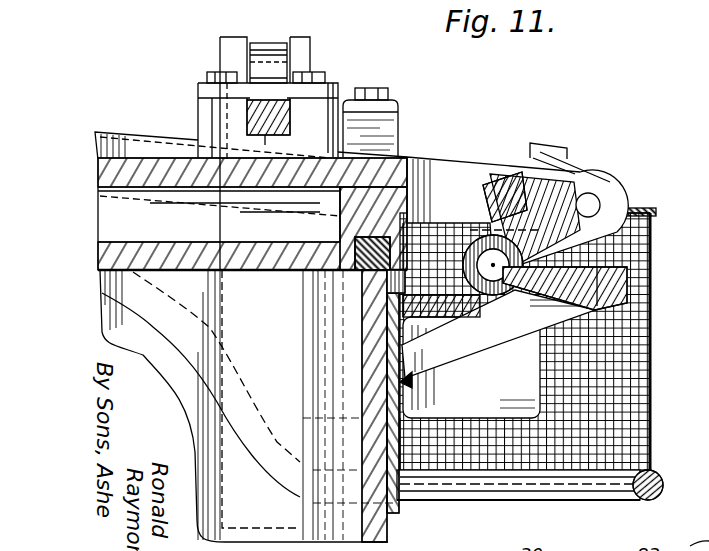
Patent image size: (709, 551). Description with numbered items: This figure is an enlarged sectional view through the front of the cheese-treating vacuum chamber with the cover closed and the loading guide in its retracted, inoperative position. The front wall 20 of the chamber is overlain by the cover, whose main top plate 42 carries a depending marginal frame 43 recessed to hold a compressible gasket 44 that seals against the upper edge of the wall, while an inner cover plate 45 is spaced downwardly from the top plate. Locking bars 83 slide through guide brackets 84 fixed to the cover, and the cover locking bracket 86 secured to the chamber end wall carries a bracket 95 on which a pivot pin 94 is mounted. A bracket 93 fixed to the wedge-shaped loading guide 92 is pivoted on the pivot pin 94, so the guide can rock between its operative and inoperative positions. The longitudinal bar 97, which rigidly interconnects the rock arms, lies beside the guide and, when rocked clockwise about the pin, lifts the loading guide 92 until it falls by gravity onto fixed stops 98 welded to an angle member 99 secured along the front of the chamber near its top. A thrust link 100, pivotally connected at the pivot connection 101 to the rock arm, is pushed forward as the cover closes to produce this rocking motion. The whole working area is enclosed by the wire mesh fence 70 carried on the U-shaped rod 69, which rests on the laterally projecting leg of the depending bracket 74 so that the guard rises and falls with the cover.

The front wall 20 is at (313, 351).
The top plate 42 is at (155, 167).
The depending marginal frame 43 is at (340, 216).
The compressible gasket 44 is at (352, 272).
The inner cover plate 45 is at (247, 255).
The U-shaped rod 69 is at (662, 476).
The wire mesh fence 70 is at (648, 380).
The depending bracket 74 is at (380, 128).
The locking bar 83 is at (293, 73).
The guide bracket 84 is at (338, 88).
The cover locking bracket 86 is at (220, 44).
The loading guide 92 is at (537, 143).
The bracket 93 is at (488, 300).
The pivot pin 94 is at (496, 267).
The bracket 95 is at (517, 397).
The longitudinal bar 97 is at (505, 176).
The fixed stop 98 is at (507, 352).
The angle member 99 is at (412, 392).
The thrust link 100 is at (457, 160).
The pivot connection 101 is at (599, 198).